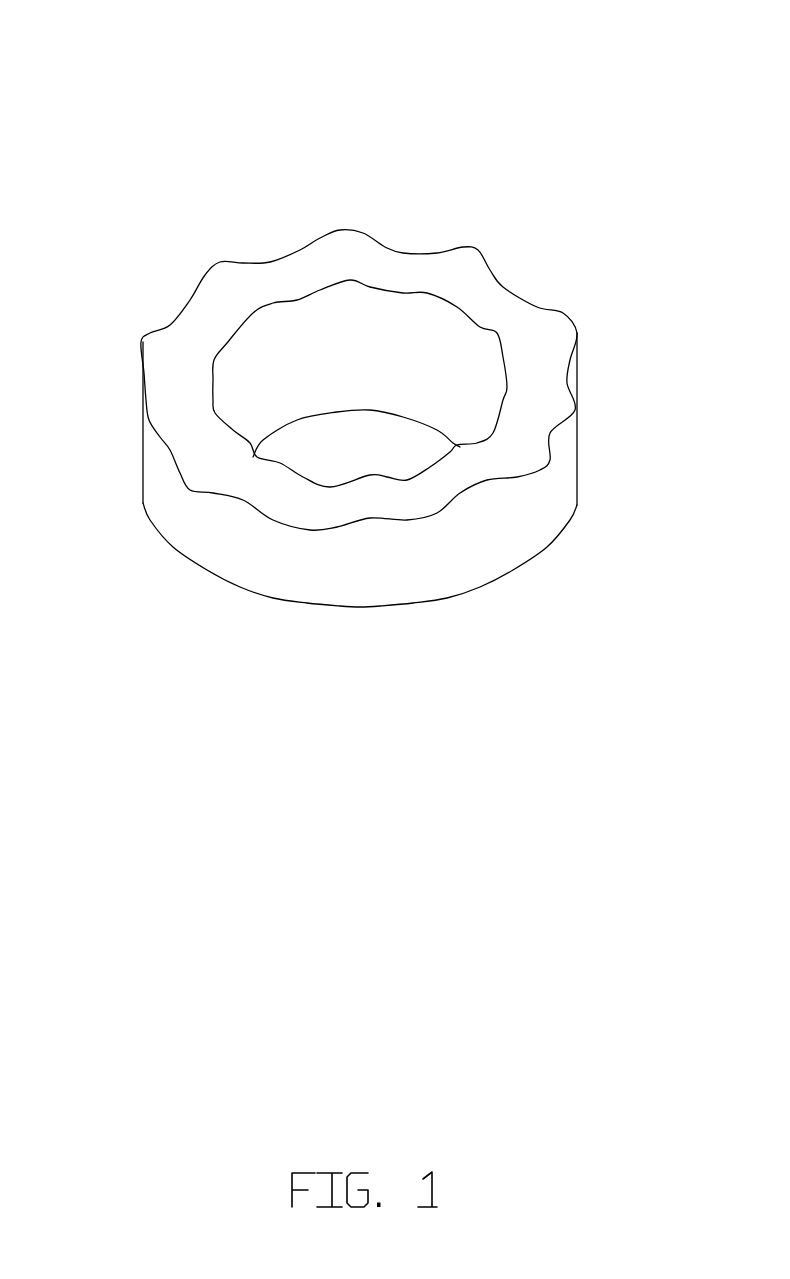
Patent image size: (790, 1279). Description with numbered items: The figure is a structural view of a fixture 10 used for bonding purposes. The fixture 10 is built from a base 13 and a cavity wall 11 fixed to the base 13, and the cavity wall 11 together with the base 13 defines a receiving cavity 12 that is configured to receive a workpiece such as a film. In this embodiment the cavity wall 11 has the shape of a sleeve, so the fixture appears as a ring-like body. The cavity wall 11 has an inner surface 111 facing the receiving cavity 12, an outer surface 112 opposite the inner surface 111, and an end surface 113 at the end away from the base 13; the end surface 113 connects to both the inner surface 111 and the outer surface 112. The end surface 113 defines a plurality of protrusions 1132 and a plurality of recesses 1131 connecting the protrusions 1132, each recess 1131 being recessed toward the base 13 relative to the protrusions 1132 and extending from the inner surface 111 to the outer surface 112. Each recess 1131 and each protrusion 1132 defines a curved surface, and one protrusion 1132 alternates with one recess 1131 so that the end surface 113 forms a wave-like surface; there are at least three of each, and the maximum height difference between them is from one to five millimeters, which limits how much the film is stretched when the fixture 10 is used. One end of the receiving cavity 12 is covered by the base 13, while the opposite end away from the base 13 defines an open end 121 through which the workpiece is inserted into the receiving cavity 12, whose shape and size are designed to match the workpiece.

The fixture 10 is at (157, 55).
The cavity wall 11 is at (190, 488).
The receiving cavity 12 is at (348, 437).
The base 13 is at (470, 550).
The inner surface 111 is at (375, 323).
The outer surface 112 is at (543, 487).
The end surface 113 is at (592, 202).
The recesses 1131 is at (500, 307).
The protrusions 1132 is at (457, 270).
The open end 121 is at (538, 392).